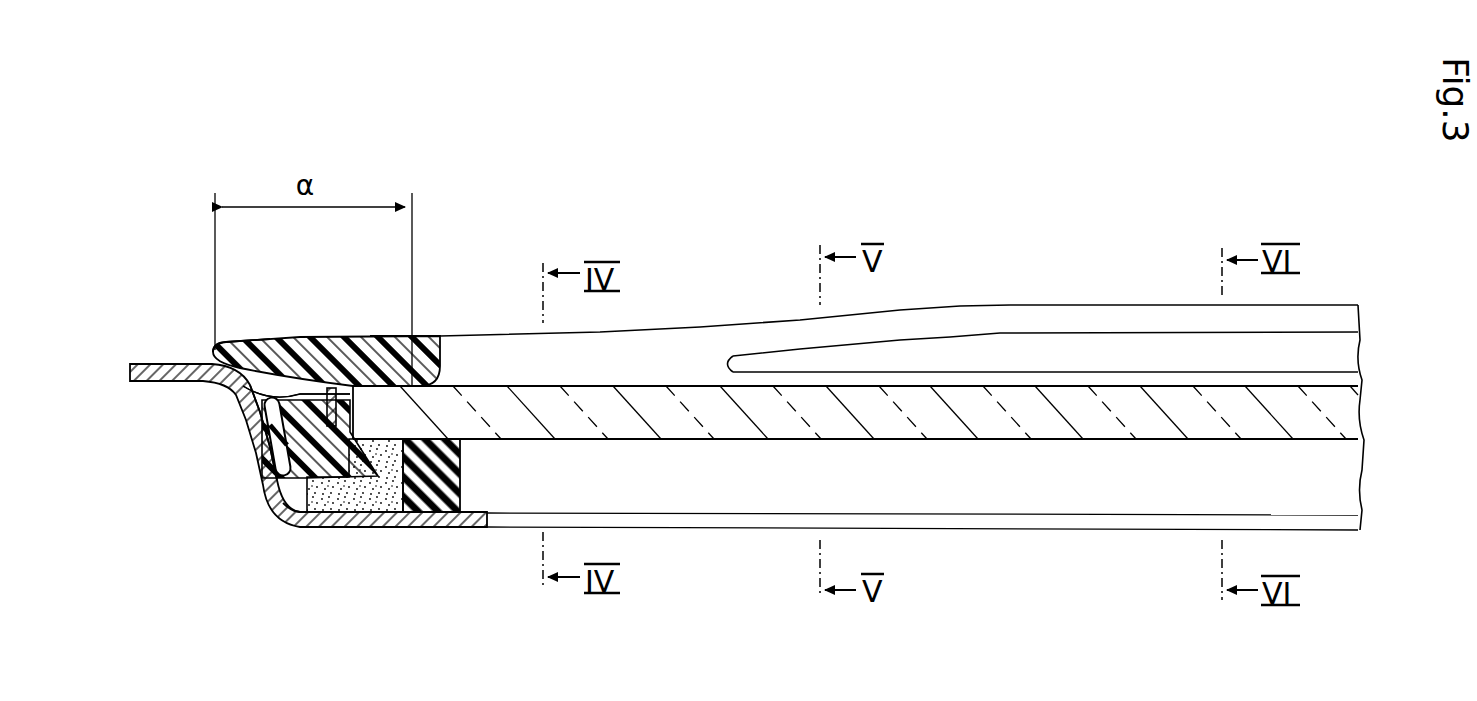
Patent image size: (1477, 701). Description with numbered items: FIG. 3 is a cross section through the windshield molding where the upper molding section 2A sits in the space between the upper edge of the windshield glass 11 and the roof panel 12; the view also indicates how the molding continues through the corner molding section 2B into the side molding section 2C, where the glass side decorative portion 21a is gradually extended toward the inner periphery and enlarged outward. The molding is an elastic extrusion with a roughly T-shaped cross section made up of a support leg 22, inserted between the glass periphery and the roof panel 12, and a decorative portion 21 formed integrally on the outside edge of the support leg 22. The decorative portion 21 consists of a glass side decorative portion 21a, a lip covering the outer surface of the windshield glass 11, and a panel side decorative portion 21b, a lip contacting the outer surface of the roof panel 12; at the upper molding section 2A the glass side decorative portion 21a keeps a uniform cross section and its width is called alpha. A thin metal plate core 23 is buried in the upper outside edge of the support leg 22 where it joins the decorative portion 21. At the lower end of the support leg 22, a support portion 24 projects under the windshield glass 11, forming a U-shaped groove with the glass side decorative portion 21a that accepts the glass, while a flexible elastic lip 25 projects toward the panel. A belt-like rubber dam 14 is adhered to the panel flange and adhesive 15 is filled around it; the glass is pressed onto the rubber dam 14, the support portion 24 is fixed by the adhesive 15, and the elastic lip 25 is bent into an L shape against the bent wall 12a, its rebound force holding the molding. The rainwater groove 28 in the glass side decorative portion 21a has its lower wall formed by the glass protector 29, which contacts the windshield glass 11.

The windshield glass 11 is at (622, 420).
The roof panel 12 is at (152, 362).
The bent wall 12a is at (260, 463).
The rubber dam 14 is at (450, 477).
The adhesive 15 is at (372, 494).
The decorative portion 21 is at (400, 271).
The glass side decorative portion 21a is at (392, 340).
The panel side decorative portion 21b is at (238, 342).
The support leg 22 is at (297, 514).
The thin metal plate core 23 is at (247, 394).
The support portion 24 is at (332, 430).
The flexible elastic lip 25 is at (270, 418).
The rainwater groove 28 is at (1014, 355).
The glass protector 29 is at (1323, 380).
The upper molding section 2A is at (200, 330).
The corner molding section 2B is at (672, 314).
The side molding section 2C is at (1160, 298).